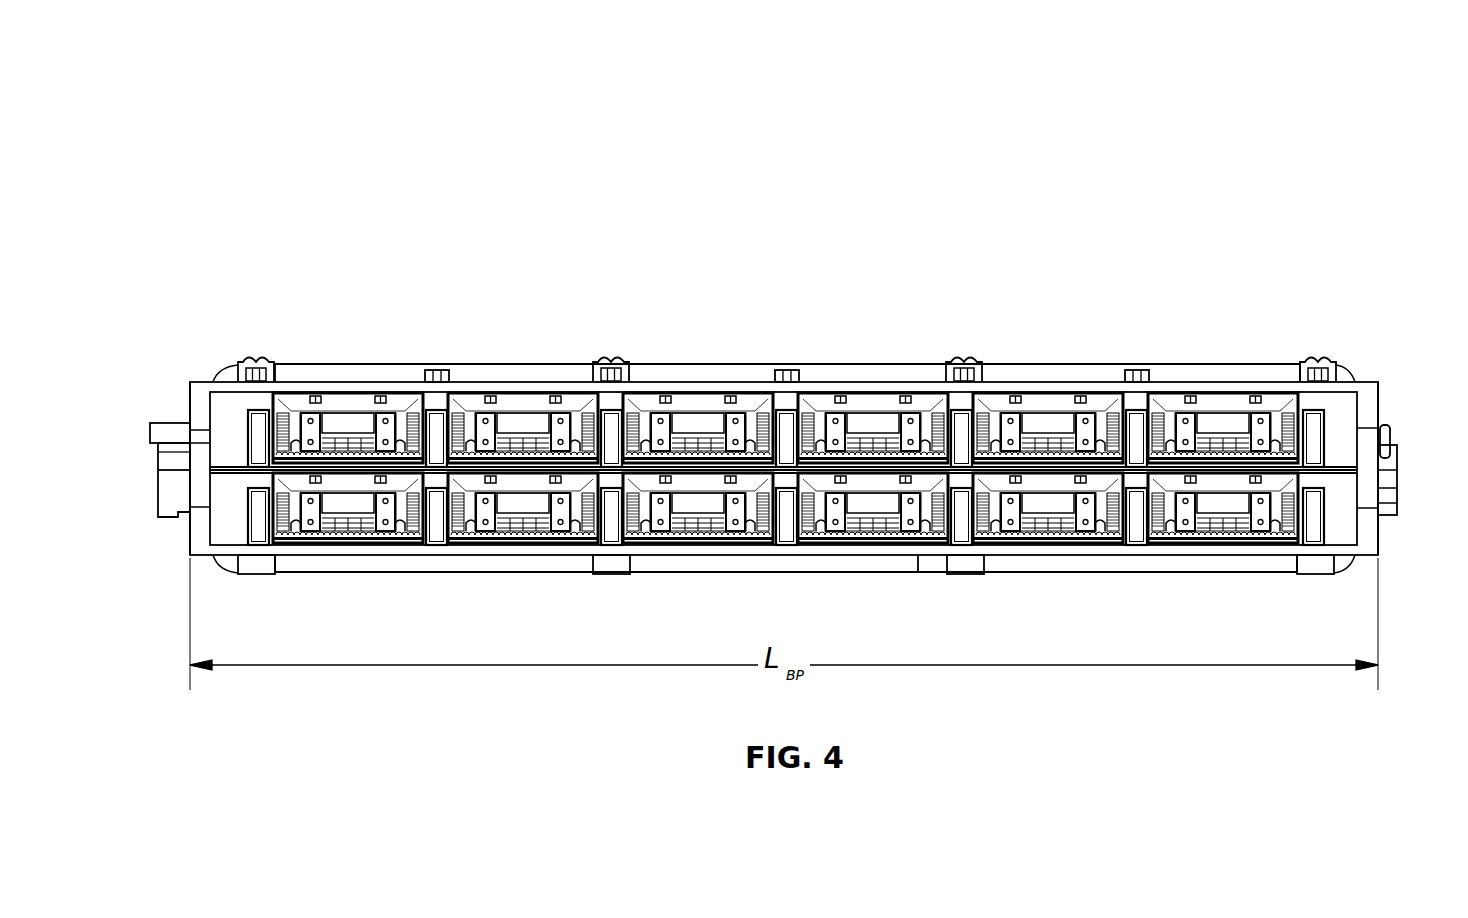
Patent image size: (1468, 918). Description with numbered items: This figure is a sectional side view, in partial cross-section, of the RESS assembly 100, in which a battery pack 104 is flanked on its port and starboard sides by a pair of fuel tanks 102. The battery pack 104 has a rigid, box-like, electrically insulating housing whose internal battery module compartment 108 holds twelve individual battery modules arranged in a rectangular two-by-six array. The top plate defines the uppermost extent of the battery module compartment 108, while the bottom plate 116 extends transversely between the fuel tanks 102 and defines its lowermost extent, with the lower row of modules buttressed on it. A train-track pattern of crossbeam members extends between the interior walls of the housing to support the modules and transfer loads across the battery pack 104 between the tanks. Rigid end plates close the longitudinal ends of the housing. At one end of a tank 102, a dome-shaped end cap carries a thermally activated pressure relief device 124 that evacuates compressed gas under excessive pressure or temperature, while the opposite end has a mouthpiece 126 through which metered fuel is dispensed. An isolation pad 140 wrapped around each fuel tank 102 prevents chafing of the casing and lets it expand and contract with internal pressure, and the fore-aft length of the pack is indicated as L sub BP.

The RESS assembly 100 is at (297, 90).
The fuel tank 102 is at (365, 320).
The battery pack 104 is at (699, 360).
The battery module compartment 108 is at (212, 490).
The bottom plate 116 is at (919, 557).
The thermally activated pressure relief device 124 is at (1398, 443).
The mouthpiece 126 is at (148, 430).
The isolation pad 140 is at (533, 372).